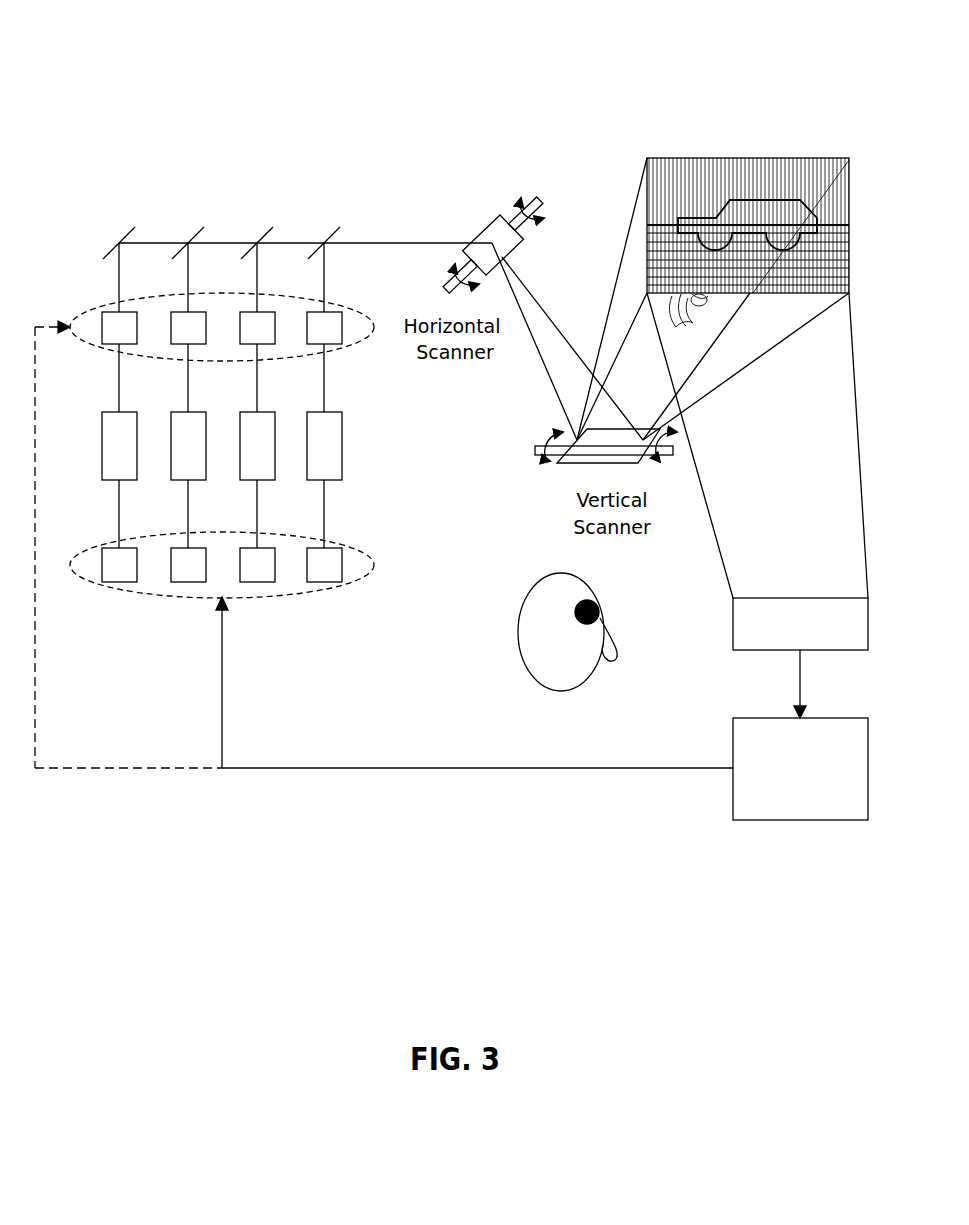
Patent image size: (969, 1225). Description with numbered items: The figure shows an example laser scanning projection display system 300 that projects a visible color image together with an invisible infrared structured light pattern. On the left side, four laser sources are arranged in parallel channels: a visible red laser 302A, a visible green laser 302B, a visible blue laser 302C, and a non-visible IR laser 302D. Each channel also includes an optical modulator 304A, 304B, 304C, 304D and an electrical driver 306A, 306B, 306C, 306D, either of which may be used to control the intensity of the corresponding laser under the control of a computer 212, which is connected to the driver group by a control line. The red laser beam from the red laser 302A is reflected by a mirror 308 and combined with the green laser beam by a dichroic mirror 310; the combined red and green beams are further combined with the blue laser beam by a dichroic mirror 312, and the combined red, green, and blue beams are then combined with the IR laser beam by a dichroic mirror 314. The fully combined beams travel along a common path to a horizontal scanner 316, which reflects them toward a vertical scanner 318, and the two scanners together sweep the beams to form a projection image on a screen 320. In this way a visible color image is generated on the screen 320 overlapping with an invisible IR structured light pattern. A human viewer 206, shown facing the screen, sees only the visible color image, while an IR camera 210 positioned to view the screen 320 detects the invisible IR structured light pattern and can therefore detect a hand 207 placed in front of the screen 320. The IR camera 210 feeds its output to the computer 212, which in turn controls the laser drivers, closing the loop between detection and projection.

The laser scanning projection display system 300 is at (331, 66).
The mirror 308 is at (130, 227).
The dichroic mirror 310 is at (199, 227).
The dichroic mirror 312 is at (268, 227).
The dichroic mirror 314 is at (335, 227).
The optical modulator 304A is at (127, 308).
The optical modulator 304B is at (196, 308).
The optical modulator 304C is at (265, 308).
The optical modulator 304D is at (332, 308).
The visible red (R) laser 302A is at (127, 412).
The visible green (G) laser 302B is at (196, 412).
The visible blue (B) laser 302C is at (265, 412).
The non-visible IR laser 302D is at (332, 412).
The electrical driver 306A is at (127, 548).
The electrical driver 306B is at (196, 548).
The electrical driver 306C is at (265, 548).
The electrical driver 306D is at (332, 548).
The horizontal scanner 316 is at (488, 224).
The vertical scanner 318 is at (550, 438).
The screen 320 is at (685, 158).
The hand 207 is at (708, 306).
The viewer 206 is at (522, 611).
The IR camera 210 is at (732, 609).
The computer 212 is at (732, 739).